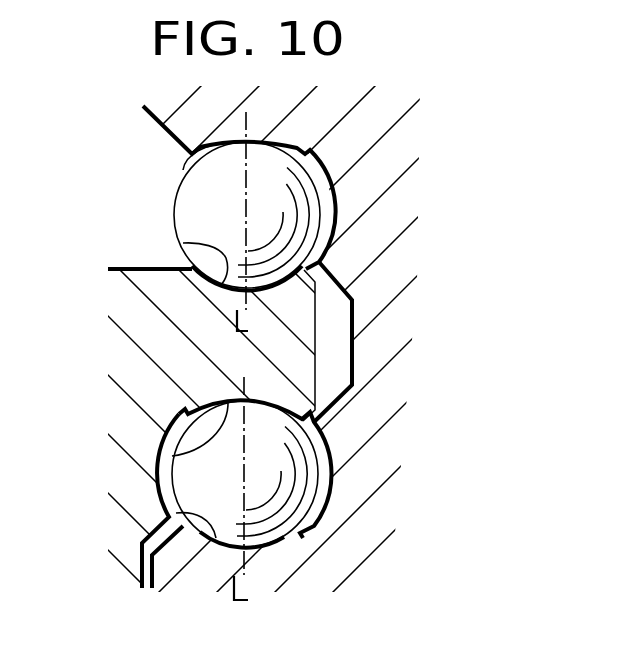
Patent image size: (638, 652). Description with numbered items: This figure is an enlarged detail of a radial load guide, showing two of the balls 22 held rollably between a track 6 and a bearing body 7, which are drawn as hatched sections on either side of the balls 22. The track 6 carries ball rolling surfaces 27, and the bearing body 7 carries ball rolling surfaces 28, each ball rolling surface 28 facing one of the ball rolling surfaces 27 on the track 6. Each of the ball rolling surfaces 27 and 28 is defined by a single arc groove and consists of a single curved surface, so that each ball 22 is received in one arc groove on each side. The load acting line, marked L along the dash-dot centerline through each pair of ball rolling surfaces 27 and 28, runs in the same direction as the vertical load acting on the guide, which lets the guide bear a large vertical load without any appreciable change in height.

The track 6 is at (160, 338).
The bearing body 7 is at (388, 327).
The balls 22 is at (192, 216).
The ball rolling surfaces 27 is at (183, 243).
The ball rolling surfaces 28 is at (185, 172).